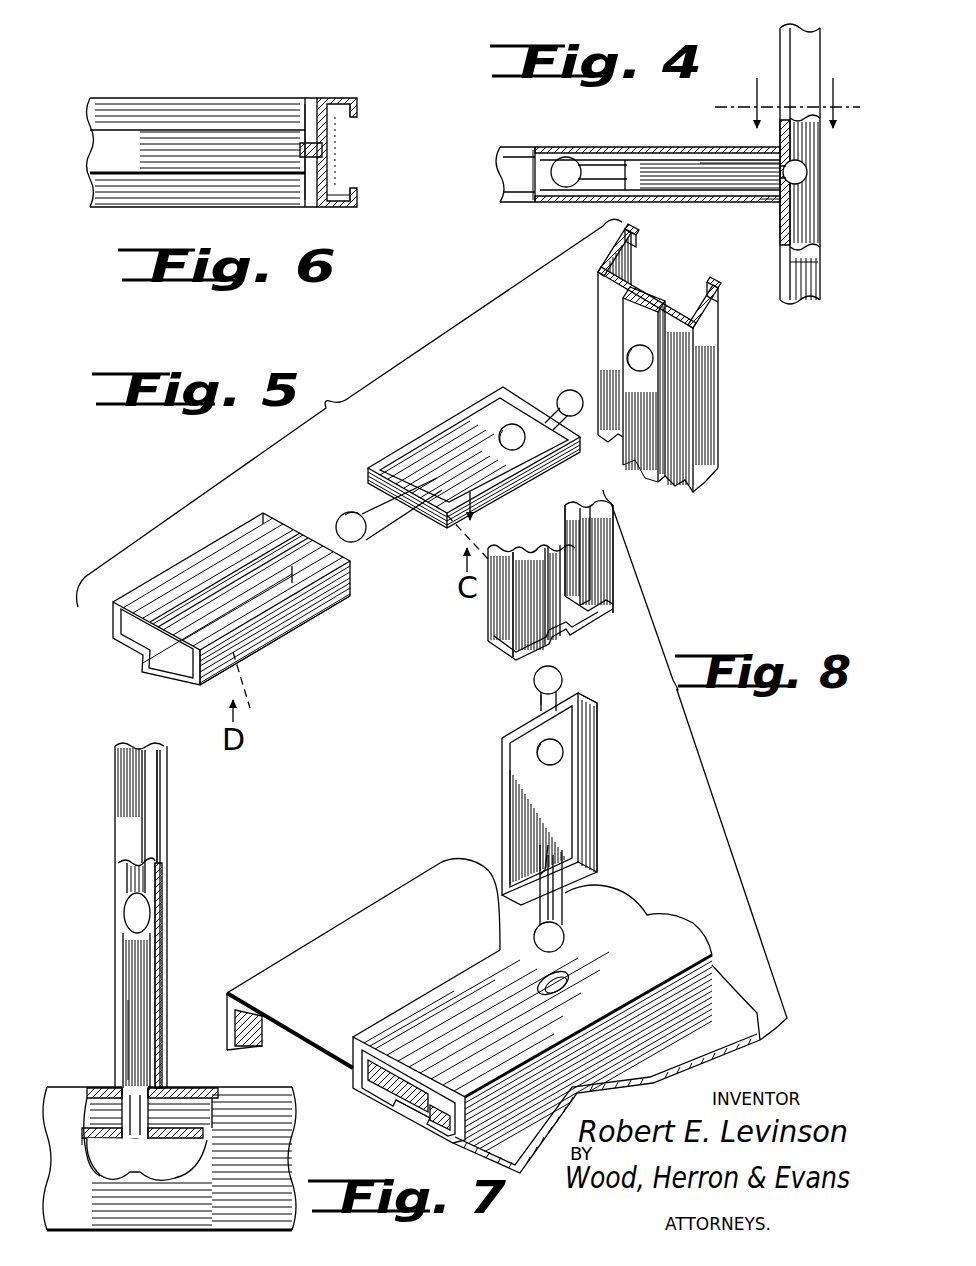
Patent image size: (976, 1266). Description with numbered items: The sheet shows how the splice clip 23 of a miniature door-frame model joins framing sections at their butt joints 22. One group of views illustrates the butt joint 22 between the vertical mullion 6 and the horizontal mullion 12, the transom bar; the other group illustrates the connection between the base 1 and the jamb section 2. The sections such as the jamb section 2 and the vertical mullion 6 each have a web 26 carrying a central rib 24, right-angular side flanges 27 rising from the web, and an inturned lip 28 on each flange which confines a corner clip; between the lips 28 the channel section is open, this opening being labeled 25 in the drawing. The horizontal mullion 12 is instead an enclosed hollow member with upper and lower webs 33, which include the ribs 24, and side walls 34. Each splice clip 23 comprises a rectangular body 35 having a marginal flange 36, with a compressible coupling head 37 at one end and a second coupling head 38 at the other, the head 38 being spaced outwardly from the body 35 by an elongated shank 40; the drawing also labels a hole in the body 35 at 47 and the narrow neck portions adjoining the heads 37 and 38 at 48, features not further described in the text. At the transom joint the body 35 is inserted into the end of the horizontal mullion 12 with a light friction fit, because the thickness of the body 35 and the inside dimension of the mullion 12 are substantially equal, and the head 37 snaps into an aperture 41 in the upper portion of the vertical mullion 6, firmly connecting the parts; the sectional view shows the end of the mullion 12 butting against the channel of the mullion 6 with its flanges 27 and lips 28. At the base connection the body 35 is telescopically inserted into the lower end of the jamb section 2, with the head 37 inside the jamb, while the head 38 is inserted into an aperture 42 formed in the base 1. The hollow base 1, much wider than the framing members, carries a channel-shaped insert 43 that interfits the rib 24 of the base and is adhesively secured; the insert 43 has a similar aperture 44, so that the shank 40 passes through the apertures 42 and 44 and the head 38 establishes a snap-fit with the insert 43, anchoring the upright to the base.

In FIG. 8, the base section 1 is at (320, 957).
In FIG. 7, the base section 1 is at (268, 1190).
In FIG. 5, the jamb section 2 is at (486, 607).
In FIG. 7, the jamb section 2 is at (138, 816).
In FIG. 6, the vertical mullion 6 is at (340, 96).
In FIG. 4, the vertical mullion 6 is at (812, 62).
In FIG. 5, the vertical mullion 6 is at (706, 413).
In FIG. 6, the horizontal mullion 12 is at (138, 118).
In FIG. 4, the horizontal mullion 12 is at (530, 145).
In FIG. 5, the horizontal mullion 12 is at (194, 570).
In FIG. 6, the butt joint 22 is at (315, 125).
In FIG. 4, the butt joint 22 is at (770, 201).
In FIG. 4, the splice clip 23 is at (645, 172).
In FIG. 5, the splice clip 23 is at (463, 410).
In FIG. 8, the splice clip 23 is at (500, 787).
In FIG. 7, the splice clip 23 is at (123, 972).
In FIG. 6, the central rib 24 is at (100, 160).
In FIG. 4, the central rib 24 is at (780, 44).
In FIG. 5, the central rib 24 is at (168, 607).
In FIG. 8, the central rib 24 is at (433, 1007).
In FIG. 7, the central rib 24 is at (168, 846).
In FIG. 6, the channel opening 25 is at (366, 172).
In FIG. 5, the channel opening 25 is at (533, 535).
In FIG. 6, the web 26 is at (300, 207).
In FIG. 5, the web 26 is at (598, 620).
In FIG. 7, the web 26 is at (168, 770).
In FIG. 6, the side flange 27 is at (344, 208).
In FIG. 4, the side flange 27 is at (806, 271).
In FIG. 5, the side flange 27 is at (596, 578).
In FIG. 6, the inturned lip 28 is at (354, 106).
In FIG. 5, the inturned lip 28 is at (638, 236).
In FIG. 6, the upper and lower webs 33 is at (215, 118).
In FIG. 5, the upper and lower webs 33 is at (322, 582).
In FIG. 6, the side walls 34 is at (160, 208).
In FIG. 5, the side walls 34 is at (112, 626).
In FIG. 5, the rectangular body 35 is at (440, 450).
In FIG. 8, the rectangular body 35 is at (527, 818).
In FIG. 4, the marginal flange 36 is at (712, 160).
In FIG. 5, the marginal flange 36 is at (540, 453).
In FIG. 8, the marginal flange 36 is at (578, 724).
In FIG. 7, the marginal flange 36 is at (133, 1014).
In FIG. 4, the compressible coupling head 37 is at (808, 170).
In FIG. 5, the compressible coupling head 37 is at (565, 390).
In FIG. 8, the compressible coupling head 37 is at (556, 684).
In FIG. 7, the compressible coupling head 37 is at (148, 909).
In FIG. 4, the second coupling head 38 is at (566, 160).
In FIG. 5, the second coupling head 38 is at (355, 538).
In FIG. 8, the second coupling head 38 is at (560, 934).
In FIG. 7, the second coupling head 38 is at (139, 1170).
In FIG. 4, the elongated shank 40 is at (600, 165).
In FIG. 5, the elongated shank 40 is at (396, 506).
In FIG. 8, the elongated shank 40 is at (552, 895).
In FIG. 7, the elongated shank 40 is at (130, 1112).
In FIG. 4, the aperture 41 is at (792, 201).
In FIG. 5, the aperture 41 is at (642, 353).
In FIG. 8, the aperture 42 is at (568, 977).
In FIG. 7, the aperture 42 is at (174, 1088).
In FIG. 8, the channel-shaped insert 43 is at (378, 1100).
In FIG. 7, the channel-shaped insert 43 is at (94, 1164).
In FIG. 7, the aperture 44 is at (149, 1144).
In FIG. 5, the hole 47 is at (512, 445).
In FIG. 8, the hole 47 is at (557, 757).
In FIG. 5, the hook shank 48 is at (343, 517).
In FIG. 8, the hook shank 48 is at (541, 694).